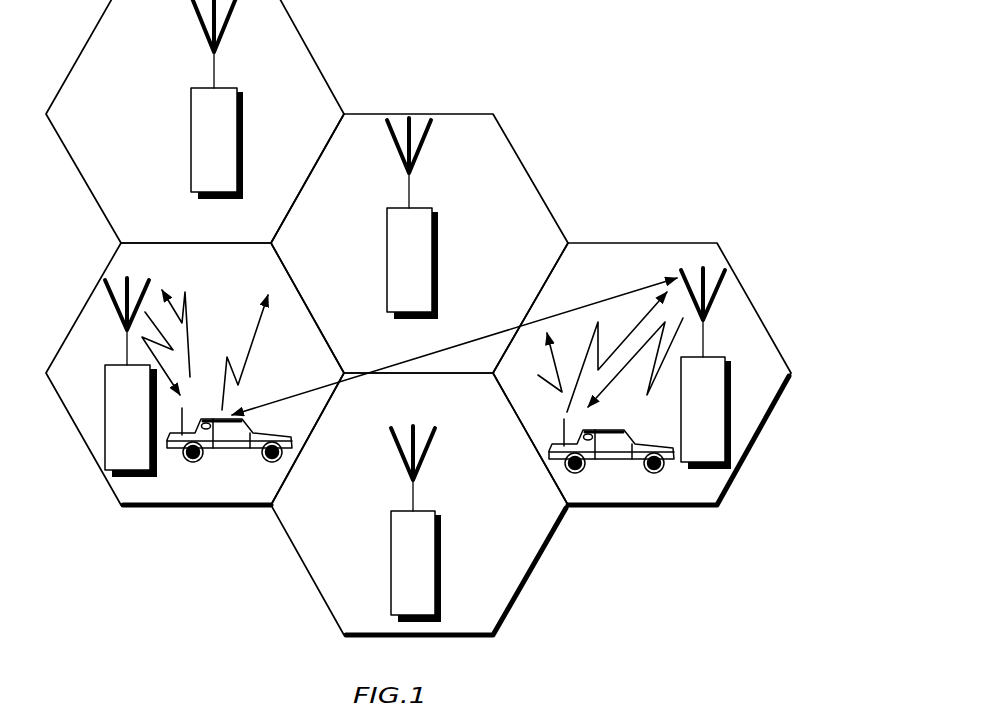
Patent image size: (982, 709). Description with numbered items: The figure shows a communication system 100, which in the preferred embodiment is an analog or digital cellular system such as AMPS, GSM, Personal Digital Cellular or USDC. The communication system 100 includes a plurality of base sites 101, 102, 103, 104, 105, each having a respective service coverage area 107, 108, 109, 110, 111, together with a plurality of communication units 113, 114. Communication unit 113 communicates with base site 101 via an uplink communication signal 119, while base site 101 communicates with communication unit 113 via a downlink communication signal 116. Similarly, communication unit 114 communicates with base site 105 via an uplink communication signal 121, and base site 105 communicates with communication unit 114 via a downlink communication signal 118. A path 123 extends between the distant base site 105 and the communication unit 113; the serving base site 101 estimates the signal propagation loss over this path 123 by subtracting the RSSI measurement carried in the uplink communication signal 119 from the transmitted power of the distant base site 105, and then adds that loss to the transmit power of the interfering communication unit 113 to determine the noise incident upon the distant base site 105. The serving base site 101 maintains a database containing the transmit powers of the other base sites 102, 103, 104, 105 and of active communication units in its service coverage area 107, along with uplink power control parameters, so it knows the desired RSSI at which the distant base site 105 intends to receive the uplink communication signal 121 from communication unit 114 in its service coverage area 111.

The communication system 100 is at (738, 90).
The base site 101 is at (93, 377).
The base site 102 is at (243, 128).
The base site 103 is at (389, 540).
The base site 104 is at (438, 248).
The base site 105 is at (729, 373).
The service coverage area 107 is at (88, 300).
The service coverage area 108 is at (296, 30).
The service coverage area 109 is at (537, 572).
The service coverage area 110 is at (472, 114).
The service coverage area 111 is at (630, 243).
The communication unit 113 is at (257, 452).
The communication unit 114 is at (615, 465).
The downlink communication signal 116 is at (127, 343).
The downlink communication signal 118 is at (610, 380).
The uplink communication signal 119 is at (189, 338).
The uplink communication signal 121 is at (597, 325).
The path 123 is at (478, 340).